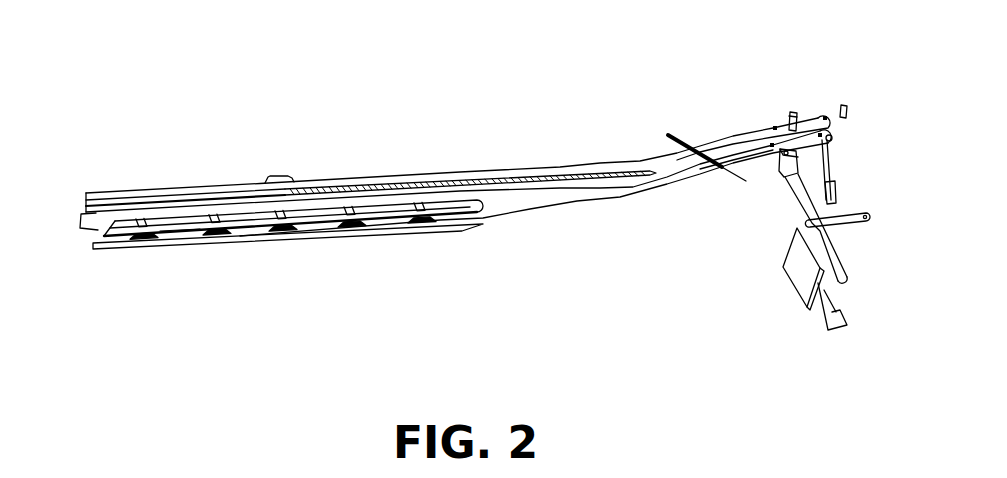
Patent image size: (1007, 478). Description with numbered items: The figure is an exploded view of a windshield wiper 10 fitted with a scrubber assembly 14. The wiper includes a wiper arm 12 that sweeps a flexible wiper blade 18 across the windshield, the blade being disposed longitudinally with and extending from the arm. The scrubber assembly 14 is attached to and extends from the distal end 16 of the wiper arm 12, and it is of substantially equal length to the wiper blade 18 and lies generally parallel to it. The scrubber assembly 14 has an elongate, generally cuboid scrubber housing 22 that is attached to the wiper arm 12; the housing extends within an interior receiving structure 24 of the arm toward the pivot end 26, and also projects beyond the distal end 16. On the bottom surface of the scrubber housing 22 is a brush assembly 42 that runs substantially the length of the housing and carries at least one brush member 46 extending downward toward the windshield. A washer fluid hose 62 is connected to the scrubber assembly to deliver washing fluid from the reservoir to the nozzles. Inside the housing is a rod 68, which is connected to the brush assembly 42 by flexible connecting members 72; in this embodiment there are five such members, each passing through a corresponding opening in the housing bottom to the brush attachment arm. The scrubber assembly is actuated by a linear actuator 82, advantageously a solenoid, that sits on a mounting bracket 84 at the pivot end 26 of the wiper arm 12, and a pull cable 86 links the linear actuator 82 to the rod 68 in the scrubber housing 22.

The windshield wiper 10 is at (136, 140).
The wiper arm 12 is at (550, 166).
The scrubber assembly 14 is at (78, 222).
The distal end 16 is at (290, 178).
The wiper blade 18 is at (86, 205).
The scrubber housing 22 is at (115, 216).
The interior receiving structure 24 is at (510, 170).
The pivot end 26 is at (826, 112).
The brush assembly 42 is at (297, 247).
The brush member 46 is at (455, 233).
The washer fluid hose 62 is at (541, 217).
The rod 68 is at (179, 233).
The flexible connecting member 72 is at (140, 240).
The linear actuator 82 is at (837, 303).
The mounting bracket 84 is at (840, 228).
The pull cable 86 is at (677, 135).